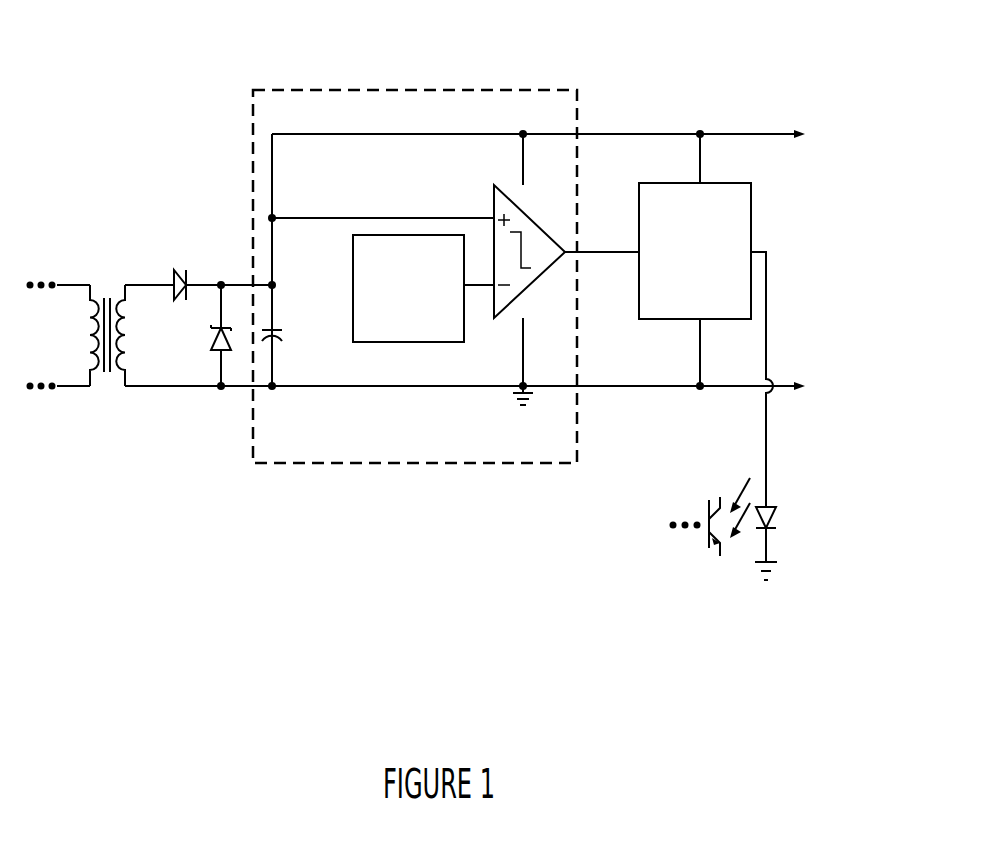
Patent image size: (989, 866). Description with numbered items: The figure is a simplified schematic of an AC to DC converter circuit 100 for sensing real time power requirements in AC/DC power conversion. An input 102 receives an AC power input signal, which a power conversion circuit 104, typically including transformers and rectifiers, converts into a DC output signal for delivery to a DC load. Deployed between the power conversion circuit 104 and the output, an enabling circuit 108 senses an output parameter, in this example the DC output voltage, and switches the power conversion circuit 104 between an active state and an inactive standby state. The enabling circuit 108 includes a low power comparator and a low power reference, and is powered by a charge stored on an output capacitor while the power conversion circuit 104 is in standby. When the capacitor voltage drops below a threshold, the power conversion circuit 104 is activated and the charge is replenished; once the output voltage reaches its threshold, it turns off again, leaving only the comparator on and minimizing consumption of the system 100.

The AC to DC converter circuit 100 is at (440, 580).
The input 102 is at (72, 456).
The power conversion circuit 104 is at (153, 119).
The enabling circuit 108 is at (347, 88).